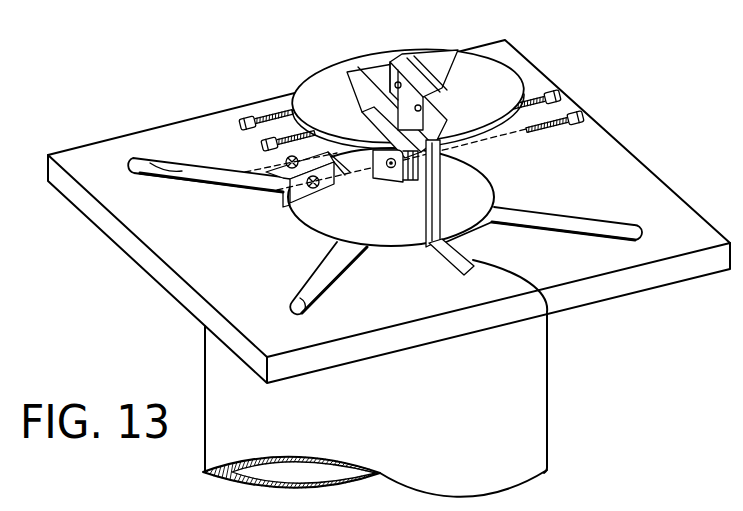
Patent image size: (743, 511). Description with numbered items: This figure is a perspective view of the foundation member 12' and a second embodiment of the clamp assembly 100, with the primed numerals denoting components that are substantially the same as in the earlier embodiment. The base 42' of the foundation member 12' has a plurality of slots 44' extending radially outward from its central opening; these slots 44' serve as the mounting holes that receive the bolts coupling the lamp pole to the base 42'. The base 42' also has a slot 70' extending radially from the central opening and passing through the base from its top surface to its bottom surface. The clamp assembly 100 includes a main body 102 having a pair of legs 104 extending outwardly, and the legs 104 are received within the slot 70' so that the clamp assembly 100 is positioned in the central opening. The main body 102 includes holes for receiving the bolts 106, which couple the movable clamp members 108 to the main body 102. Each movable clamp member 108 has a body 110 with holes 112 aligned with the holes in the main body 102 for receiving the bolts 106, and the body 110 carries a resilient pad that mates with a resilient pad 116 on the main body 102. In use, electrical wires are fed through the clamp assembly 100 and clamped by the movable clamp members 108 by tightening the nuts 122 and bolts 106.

The clamp assembly 100 is at (298, 76).
The holes 112 is at (388, 162).
The nuts 122 is at (280, 165).
The slots 44' is at (396, 223).
The base 42' is at (389, 211).
The bolts 106 is at (583, 116).
The main body 102 is at (438, 208).
The legs 104 is at (443, 247).
The body 110 is at (300, 203).
The movable clamp members 108 is at (394, 185).
The resilient pad 116 is at (411, 152).
The slot 70' is at (456, 241).
The foundation member 12' is at (434, 405).